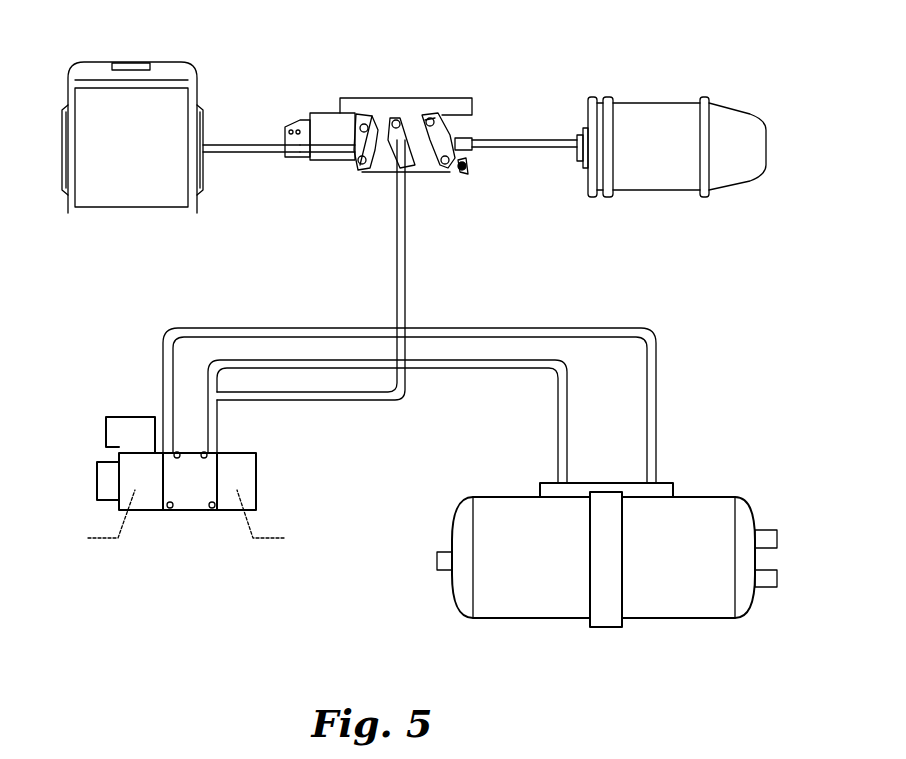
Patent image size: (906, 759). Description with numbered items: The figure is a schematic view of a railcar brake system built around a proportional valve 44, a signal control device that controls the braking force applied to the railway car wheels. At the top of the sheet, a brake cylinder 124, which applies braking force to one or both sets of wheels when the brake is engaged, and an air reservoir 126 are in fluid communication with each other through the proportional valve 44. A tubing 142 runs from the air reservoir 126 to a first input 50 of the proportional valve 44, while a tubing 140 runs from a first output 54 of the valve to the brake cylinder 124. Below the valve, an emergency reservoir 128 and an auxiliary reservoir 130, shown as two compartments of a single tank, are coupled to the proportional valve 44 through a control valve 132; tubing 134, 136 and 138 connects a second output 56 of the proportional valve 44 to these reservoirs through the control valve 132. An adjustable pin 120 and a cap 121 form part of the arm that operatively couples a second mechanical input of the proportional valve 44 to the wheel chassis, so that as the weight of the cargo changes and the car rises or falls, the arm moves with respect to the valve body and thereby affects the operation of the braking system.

The proportional valve 44 is at (347, 88).
The first input 50 is at (371, 169).
The first output 54 is at (433, 118).
The second output 56 is at (407, 143).
The adjustable pin 120 is at (469, 169).
The cap 121 is at (467, 175).
The brake cylinder 124 is at (660, 118).
The air reservoir 126 is at (97, 108).
The emergency reservoir 128 is at (502, 590).
The auxiliary reservoir 130 is at (709, 590).
The control valve 132 is at (132, 462).
The tubing 134 is at (657, 397).
The tubing 136 is at (567, 440).
The tubing 138 is at (397, 270).
The tubing 140 is at (533, 140).
The tubing 142 is at (250, 146).